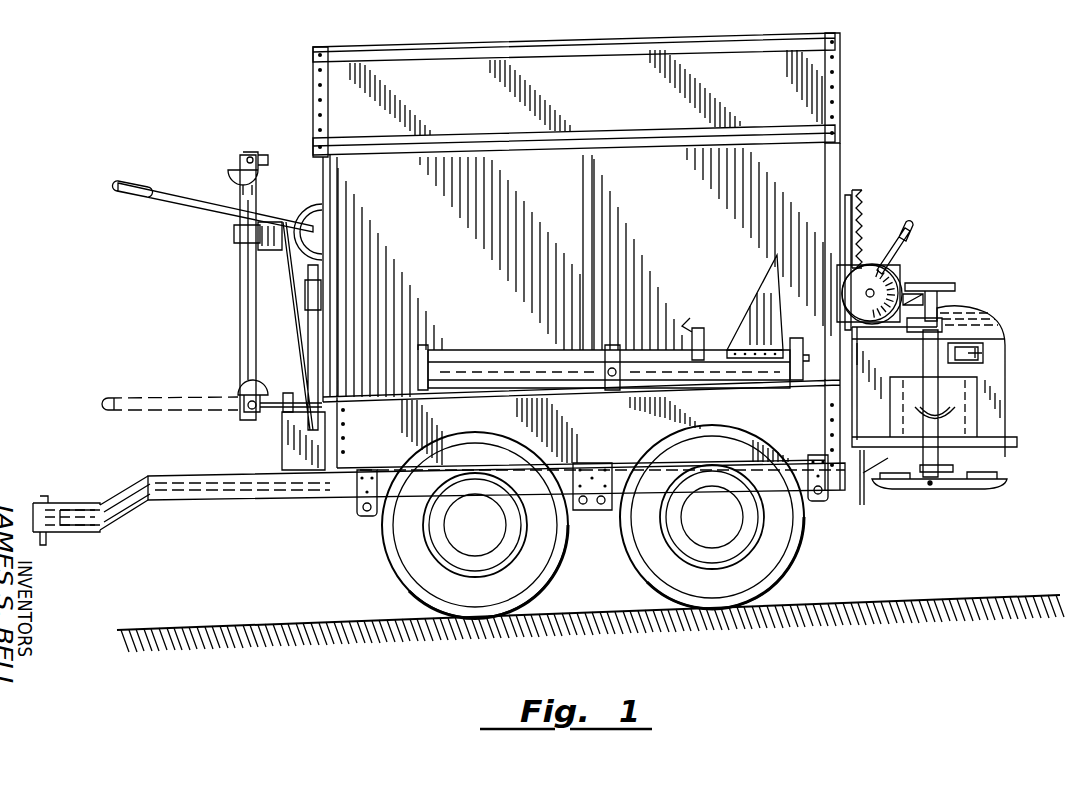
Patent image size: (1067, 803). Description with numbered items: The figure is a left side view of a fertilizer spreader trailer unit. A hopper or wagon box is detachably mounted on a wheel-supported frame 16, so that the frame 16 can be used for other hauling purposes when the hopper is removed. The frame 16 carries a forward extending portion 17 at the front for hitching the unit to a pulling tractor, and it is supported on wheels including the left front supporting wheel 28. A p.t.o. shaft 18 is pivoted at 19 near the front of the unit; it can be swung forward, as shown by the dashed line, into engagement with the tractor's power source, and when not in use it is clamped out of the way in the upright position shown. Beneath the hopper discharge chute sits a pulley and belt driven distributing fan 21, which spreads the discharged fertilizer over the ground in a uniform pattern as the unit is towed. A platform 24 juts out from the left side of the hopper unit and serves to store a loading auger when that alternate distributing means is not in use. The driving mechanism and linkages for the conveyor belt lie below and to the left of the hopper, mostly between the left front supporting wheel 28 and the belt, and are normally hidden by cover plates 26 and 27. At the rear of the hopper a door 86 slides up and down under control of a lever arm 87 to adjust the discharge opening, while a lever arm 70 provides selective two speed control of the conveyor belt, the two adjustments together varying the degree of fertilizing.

The wheel-supported frame 16 is at (336, 505).
The forward extending portion 17 is at (135, 517).
The p.t.o. shaft 18 is at (238, 291).
The pivot 19 is at (252, 420).
The distributing fan 21 is at (978, 488).
The platform 24 is at (765, 395).
The cover plate 26 is at (406, 448).
The cover plate 27 is at (644, 438).
The left front supporting wheel 28 is at (557, 577).
The lever arm 70 is at (172, 200).
The door 86 is at (848, 200).
The lever arm 87 is at (908, 224).